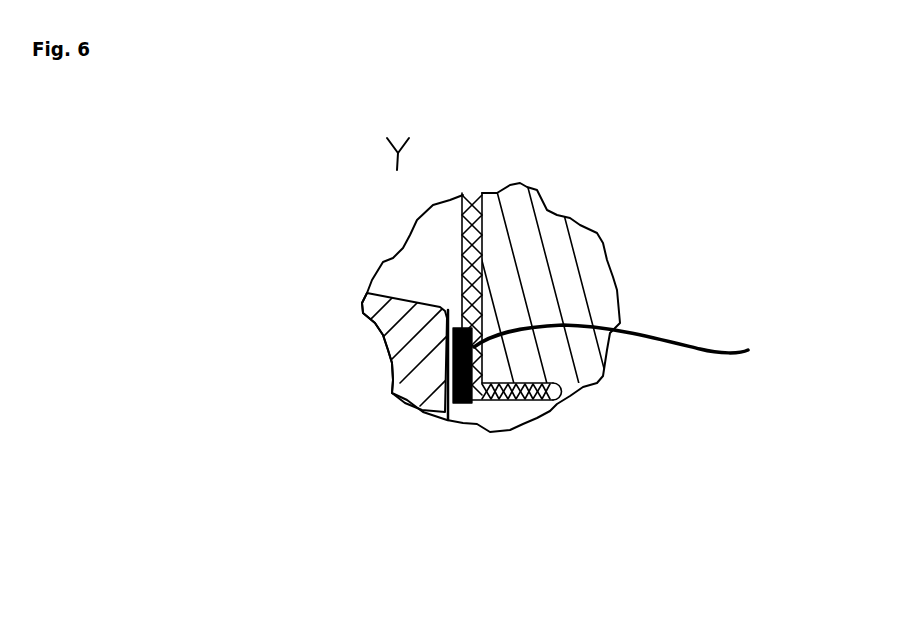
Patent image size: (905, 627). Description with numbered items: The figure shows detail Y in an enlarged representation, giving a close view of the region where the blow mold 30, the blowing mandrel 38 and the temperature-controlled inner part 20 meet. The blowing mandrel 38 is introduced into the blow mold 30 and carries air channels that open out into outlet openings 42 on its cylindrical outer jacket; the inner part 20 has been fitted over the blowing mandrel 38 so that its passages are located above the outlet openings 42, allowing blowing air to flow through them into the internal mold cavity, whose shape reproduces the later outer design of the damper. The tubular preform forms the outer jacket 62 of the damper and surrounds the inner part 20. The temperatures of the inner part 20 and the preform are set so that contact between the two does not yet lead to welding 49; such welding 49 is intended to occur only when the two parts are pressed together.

The inner part 20 is at (448, 420).
The blow mold 30 is at (573, 252).
The blowing mandrel 38 is at (403, 370).
The outlet openings 42 is at (410, 270).
The welding 49 is at (630, 340).
The outer jacket 62 is at (476, 197).